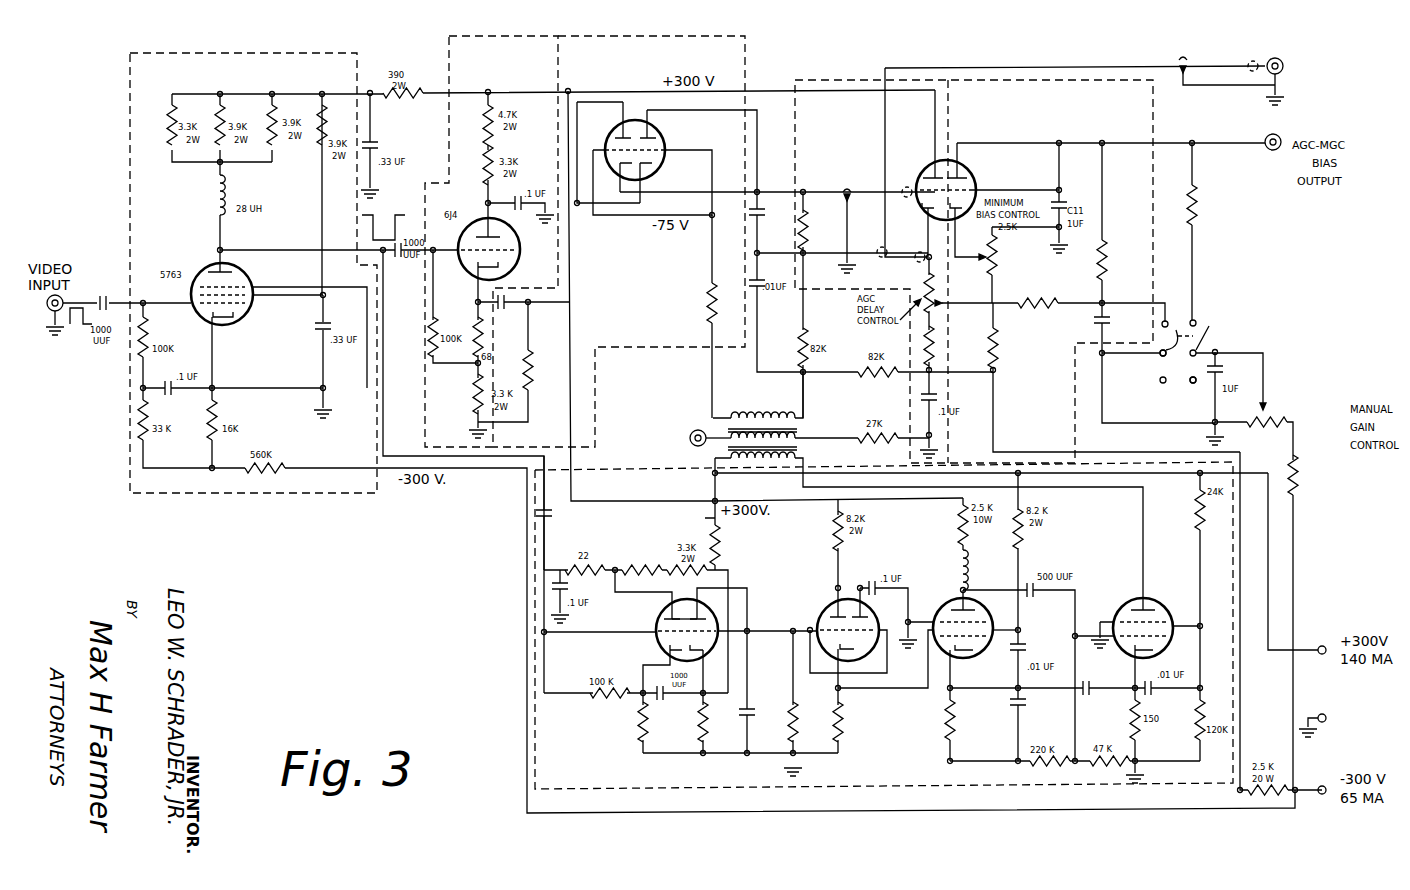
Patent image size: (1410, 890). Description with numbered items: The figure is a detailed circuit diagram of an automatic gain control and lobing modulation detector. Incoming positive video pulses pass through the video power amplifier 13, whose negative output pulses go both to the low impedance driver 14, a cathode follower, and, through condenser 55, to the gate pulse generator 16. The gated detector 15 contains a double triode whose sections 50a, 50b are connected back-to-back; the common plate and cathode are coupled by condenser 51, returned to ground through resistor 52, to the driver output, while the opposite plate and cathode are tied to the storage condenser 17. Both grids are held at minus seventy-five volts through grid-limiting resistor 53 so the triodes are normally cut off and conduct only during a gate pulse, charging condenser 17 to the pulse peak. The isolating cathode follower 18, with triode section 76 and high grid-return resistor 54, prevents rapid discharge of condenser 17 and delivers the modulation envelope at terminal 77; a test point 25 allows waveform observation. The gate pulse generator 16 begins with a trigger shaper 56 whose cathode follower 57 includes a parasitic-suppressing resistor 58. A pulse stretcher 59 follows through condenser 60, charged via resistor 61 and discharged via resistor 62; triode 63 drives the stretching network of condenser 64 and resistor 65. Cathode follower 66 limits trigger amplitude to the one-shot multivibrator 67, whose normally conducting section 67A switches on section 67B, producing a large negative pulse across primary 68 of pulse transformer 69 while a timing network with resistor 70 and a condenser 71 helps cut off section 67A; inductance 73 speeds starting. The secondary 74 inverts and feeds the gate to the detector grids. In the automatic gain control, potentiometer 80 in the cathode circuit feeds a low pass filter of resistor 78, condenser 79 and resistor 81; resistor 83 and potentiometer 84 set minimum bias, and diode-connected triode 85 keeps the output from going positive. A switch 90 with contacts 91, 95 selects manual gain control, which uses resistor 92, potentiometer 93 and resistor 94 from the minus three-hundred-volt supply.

The video power amplifier 13 is at (272, 53).
The low impedance driver 14 is at (505, 36).
The gated detector 15 is at (660, 36).
The gate pulse generator 16 is at (534, 599).
The condenser 17 is at (765, 215).
The isolating cathode follower 18 is at (840, 80).
The multivibrator test point 25 is at (693, 446).
The triode 50a is at (606, 130).
The triode 50b is at (660, 140).
The condenser 51 is at (512, 309).
The resistor 52 is at (531, 365).
The grid-limiting resistor 53 is at (708, 297).
The resistor 54 is at (818, 222).
The condenser 55 is at (553, 515).
The trigger shaper 56 is at (754, 622).
The cathode follower 57 is at (655, 650).
The resistor 58 is at (604, 568).
The pulse stretcher 59 is at (722, 650).
The condenser 60 is at (649, 735).
The resistor 61 is at (730, 540).
The resistor 62 is at (709, 732).
The triode 63 is at (708, 603).
The condenser 64 is at (751, 712).
The resistor 65 is at (797, 715).
The cathode follower 66 is at (862, 592).
The one-shot multivibrator 67 is at (1093, 590).
The multivibrator section 67A is at (940, 600).
The multivibrator section 67B is at (1156, 600).
The primary 68 is at (800, 455).
The pulse transformer 69 is at (797, 435).
The resistor 70 is at (946, 716).
The capacitor 71 is at (1012, 708).
The inductance 73 is at (968, 568).
The secondary 74 is at (770, 413).
The triode section 76 is at (935, 166).
The terminal 77 is at (1276, 57).
The resistor 78 is at (1040, 308).
The condenser 79 is at (1111, 320).
The potentiometer 80 is at (926, 285).
The resistor 81 is at (1106, 268).
The resistor 83 is at (1000, 346).
The potentiometer 84 is at (988, 262).
The triode connected as diode 85 is at (975, 176).
The MGC-AGC switch 90 is at (1220, 317).
The selector switch 91 is at (1160, 357).
The resistor 92 is at (1299, 478).
The potentiometer 93 is at (1280, 412).
The resistor 94 is at (1198, 212).
The condenser 95 is at (1190, 385).